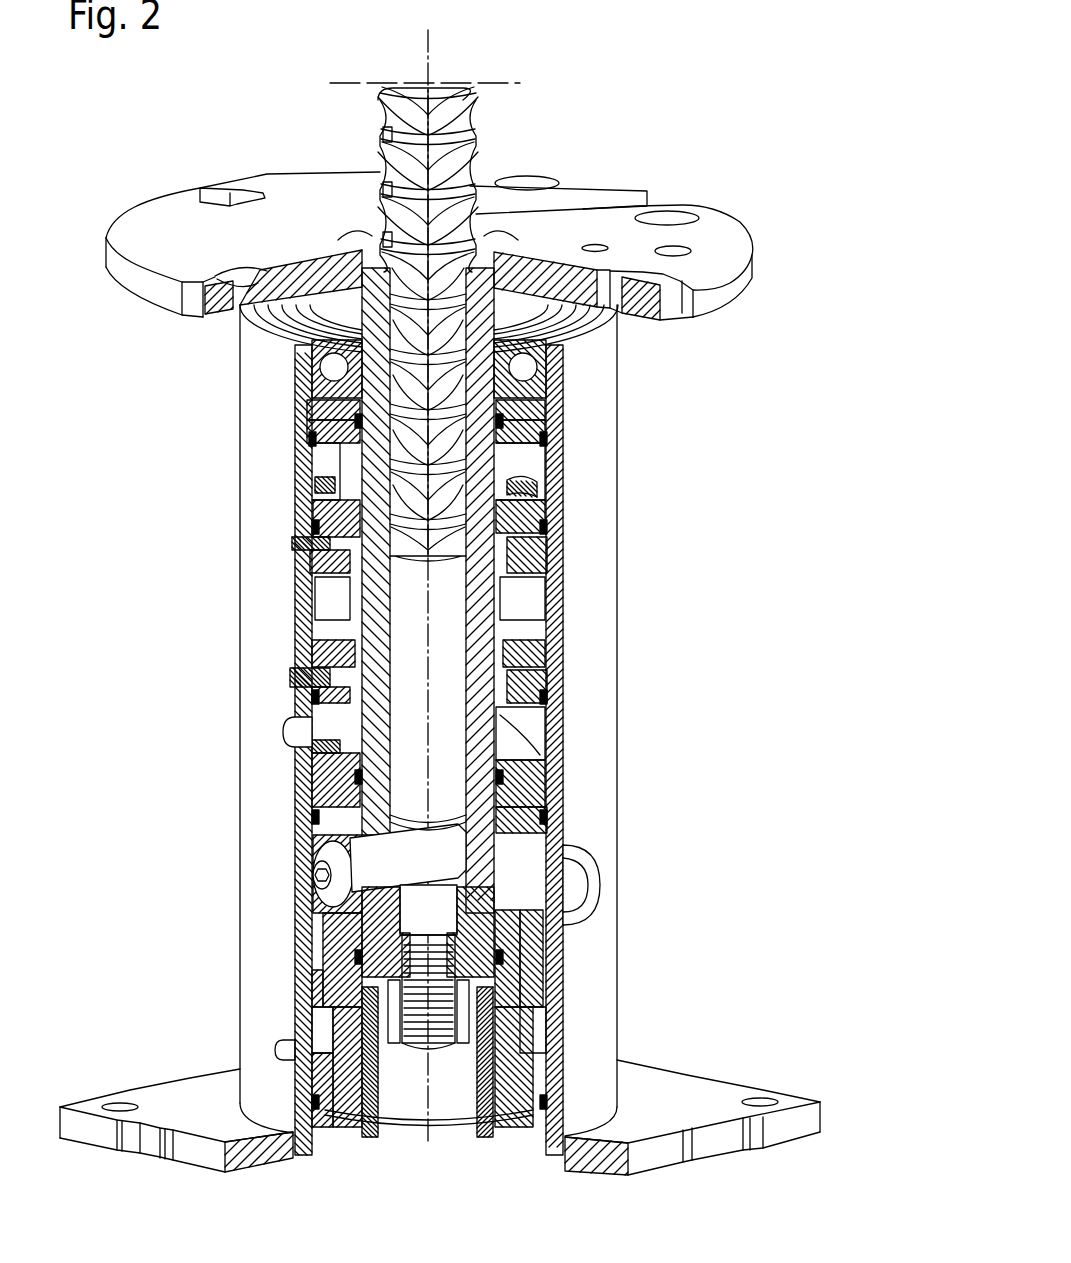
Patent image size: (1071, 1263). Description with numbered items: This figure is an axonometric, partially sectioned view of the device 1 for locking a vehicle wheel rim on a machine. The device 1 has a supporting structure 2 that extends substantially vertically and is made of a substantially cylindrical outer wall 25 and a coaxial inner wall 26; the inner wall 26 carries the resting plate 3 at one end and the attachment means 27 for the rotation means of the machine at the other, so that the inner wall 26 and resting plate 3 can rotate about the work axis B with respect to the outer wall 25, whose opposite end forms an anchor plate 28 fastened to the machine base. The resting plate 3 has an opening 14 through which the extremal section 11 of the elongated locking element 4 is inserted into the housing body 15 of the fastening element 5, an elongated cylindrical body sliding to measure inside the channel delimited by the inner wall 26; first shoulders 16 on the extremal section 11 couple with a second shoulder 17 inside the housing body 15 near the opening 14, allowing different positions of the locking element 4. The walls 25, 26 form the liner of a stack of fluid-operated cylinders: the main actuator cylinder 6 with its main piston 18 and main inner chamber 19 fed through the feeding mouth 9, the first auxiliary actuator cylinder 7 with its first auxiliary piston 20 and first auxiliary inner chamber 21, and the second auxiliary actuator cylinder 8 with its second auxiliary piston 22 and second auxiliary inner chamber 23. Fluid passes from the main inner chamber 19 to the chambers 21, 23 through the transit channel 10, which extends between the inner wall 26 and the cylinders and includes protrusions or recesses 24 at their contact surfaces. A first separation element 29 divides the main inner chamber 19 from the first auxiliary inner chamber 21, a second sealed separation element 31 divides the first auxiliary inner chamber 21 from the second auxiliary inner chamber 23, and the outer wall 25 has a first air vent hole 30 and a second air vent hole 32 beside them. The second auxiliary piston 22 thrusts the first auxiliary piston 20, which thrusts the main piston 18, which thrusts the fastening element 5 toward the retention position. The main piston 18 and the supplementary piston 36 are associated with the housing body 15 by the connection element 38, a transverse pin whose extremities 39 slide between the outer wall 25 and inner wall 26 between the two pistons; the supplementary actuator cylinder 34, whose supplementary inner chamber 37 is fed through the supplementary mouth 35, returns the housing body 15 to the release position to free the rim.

The device 1 is at (735, 68).
The supporting structure 2 is at (610, 770).
The resting plate 3 is at (718, 235).
The locking element 4 is at (489, 287).
The fastening element 5 is at (375, 455).
The main actuator cylinder 6 is at (540, 830).
The first auxiliary actuator cylinder 7 is at (550, 685).
The second auxiliary actuator cylinder 8 is at (545, 515).
The feeding mouth 9 is at (340, 722).
The transit channel 10 is at (318, 503).
The extremal section 11 is at (318, 356).
The opening 14 is at (488, 228).
The housing body 15 is at (322, 390).
The first shoulder 16 is at (443, 115).
The second shoulder 17 is at (617, 333).
The main piston 18 is at (560, 863).
The main inner chamber 19 is at (535, 790).
The first auxiliary piston 20 is at (525, 737).
The first auxiliary inner chamber 21 is at (553, 607).
The second auxiliary piston 22 is at (530, 557).
The second auxiliary inner chamber 23 is at (540, 440).
The protrusions and/or recesses 24 is at (320, 467).
The outer wall 25 is at (320, 847).
The inner wall 26 is at (520, 655).
The attachment means 27 is at (417, 1043).
The anchor plate 28 is at (197, 1107).
The first separation element 29 is at (300, 702).
The first air vent hole 30 is at (300, 672).
The second sealed separation element 31 is at (325, 567).
The second air vent hole 32 is at (540, 388).
The supplementary actuator cylinder 34 is at (555, 980).
The supplementary mouth 35 is at (293, 1057).
The supplementary piston 36 is at (535, 945).
The supplementary inner chamber 37 is at (545, 1030).
The connection element 38 is at (390, 912).
The extremities 39 is at (385, 880).
The work axis B is at (446, 1130).